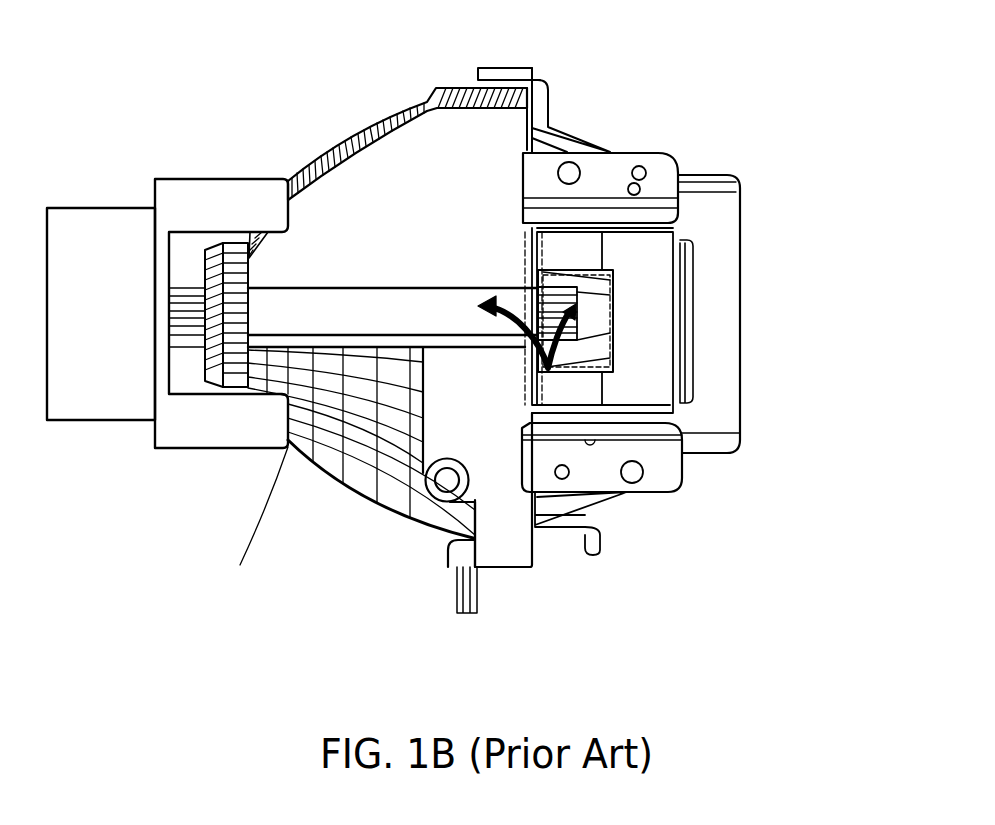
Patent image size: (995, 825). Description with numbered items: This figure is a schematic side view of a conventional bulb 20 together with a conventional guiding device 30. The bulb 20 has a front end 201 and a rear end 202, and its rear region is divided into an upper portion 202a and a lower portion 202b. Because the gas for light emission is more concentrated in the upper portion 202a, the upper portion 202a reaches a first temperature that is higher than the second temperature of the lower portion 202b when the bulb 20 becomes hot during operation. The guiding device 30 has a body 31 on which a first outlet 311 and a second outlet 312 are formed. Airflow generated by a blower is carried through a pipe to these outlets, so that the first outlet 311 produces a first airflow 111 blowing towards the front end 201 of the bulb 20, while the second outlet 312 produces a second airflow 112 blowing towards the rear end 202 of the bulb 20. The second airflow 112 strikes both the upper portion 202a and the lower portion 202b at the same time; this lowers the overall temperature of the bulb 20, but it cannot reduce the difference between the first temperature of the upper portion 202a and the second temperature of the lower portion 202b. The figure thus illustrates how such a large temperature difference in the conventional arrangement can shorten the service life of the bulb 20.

The bulb 20 is at (441, 272).
The front end 201 is at (563, 304).
The rear end 202 is at (330, 312).
The upper portion 202a is at (375, 288).
The lower portion 202b is at (380, 337).
The guiding device 30 is at (683, 148).
The body 31 is at (607, 173).
The first outlet 311 is at (613, 327).
The second outlet 312 is at (523, 363).
The first airflow 111 is at (560, 345).
The second airflow 112 is at (498, 293).